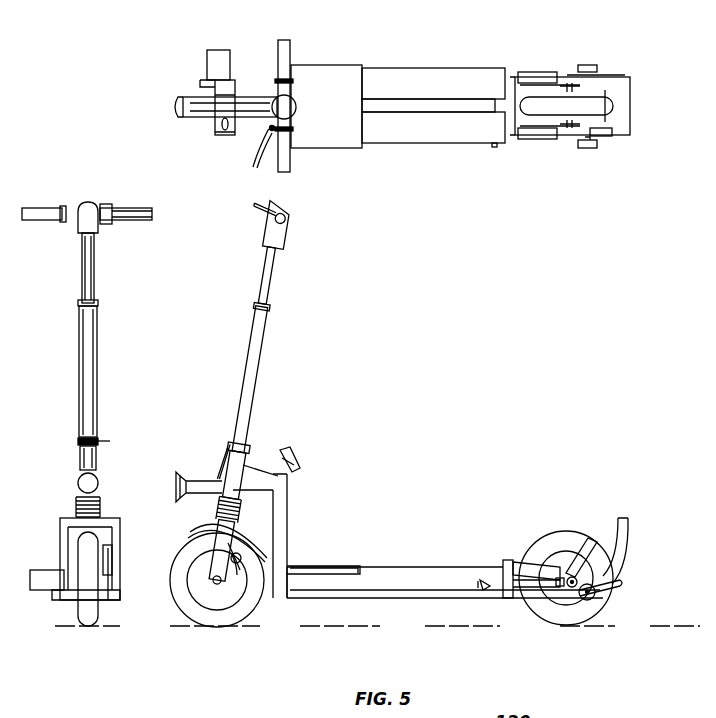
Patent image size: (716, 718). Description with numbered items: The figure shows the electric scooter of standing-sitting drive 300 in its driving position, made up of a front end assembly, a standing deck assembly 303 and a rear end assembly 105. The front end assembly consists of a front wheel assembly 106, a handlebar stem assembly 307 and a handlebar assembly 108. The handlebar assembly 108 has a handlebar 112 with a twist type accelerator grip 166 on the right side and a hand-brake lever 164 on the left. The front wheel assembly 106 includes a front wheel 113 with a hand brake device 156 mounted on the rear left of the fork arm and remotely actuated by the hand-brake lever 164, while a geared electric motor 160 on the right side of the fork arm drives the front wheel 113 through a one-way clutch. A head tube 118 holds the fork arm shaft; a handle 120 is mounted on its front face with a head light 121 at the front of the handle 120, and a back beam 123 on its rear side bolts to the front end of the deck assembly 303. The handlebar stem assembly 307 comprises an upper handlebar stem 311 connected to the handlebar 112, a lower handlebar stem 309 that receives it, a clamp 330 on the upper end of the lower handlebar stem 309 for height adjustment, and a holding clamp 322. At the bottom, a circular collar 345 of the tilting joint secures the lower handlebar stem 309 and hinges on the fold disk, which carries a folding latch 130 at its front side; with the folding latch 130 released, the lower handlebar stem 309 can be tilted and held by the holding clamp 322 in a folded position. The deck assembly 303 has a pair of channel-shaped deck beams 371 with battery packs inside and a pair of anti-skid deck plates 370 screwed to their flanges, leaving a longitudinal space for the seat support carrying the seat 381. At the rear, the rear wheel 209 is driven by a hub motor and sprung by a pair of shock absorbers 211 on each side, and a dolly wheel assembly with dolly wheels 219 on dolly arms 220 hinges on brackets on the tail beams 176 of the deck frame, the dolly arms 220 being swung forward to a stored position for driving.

The rear end assembly 105 is at (588, 50).
The front wheel assembly 106 is at (198, 642).
The handlebar assembly 108 is at (305, 162).
The handlebar 112 is at (292, 92).
The front wheel 113 is at (265, 620).
The head tube 118 is at (252, 465).
The handle 120 is at (208, 115).
The head light 121 is at (176, 107).
The back beam 123 is at (289, 510).
The folding latch 130 is at (228, 458).
The hand brake device 156 is at (240, 565).
The geared electric motor 160 is at (207, 67).
The hand-brake lever 164 is at (262, 140).
The accelerator grip 166 is at (278, 48).
The tail beam 176 is at (626, 564).
The rear wheel 209 is at (620, 100).
The shock absorber 211 is at (542, 140).
The dolly wheel 219 is at (592, 150).
The dolly arm 220 is at (608, 146).
The electric scooter of standing-sitting drive 300 is at (462, 352).
The deck assembly 303 is at (460, 170).
The handlebar stem assembly 307 is at (280, 376).
The lower handlebar stem 309 is at (268, 345).
The upper handlebar stem 311 is at (262, 270).
The holding clamp 322 is at (305, 460).
The clamp 330 is at (268, 303).
The circular collar 345 is at (238, 438).
The deck plate 370 is at (407, 150).
The deck beam 371 is at (398, 597).
The seat 381 is at (332, 565).